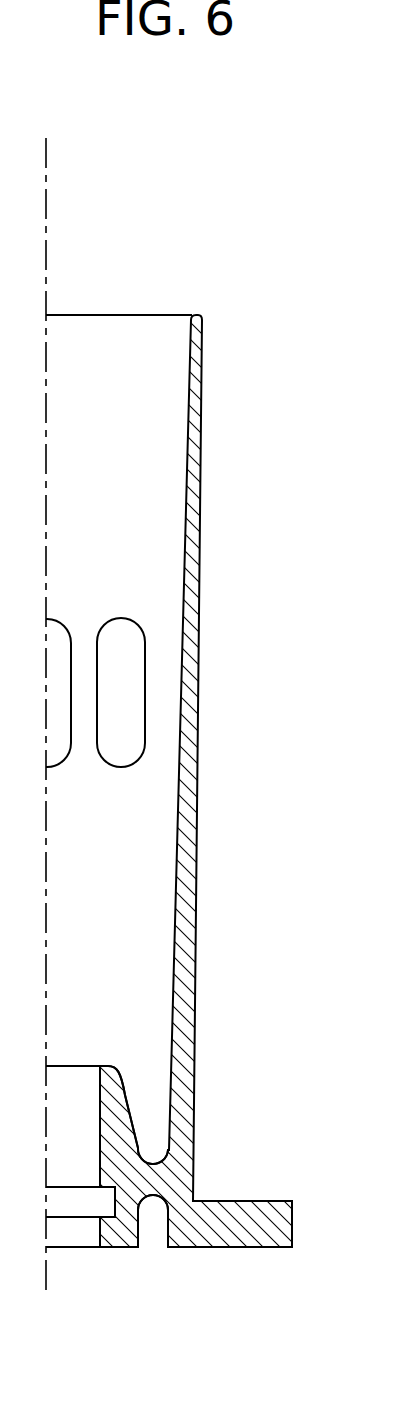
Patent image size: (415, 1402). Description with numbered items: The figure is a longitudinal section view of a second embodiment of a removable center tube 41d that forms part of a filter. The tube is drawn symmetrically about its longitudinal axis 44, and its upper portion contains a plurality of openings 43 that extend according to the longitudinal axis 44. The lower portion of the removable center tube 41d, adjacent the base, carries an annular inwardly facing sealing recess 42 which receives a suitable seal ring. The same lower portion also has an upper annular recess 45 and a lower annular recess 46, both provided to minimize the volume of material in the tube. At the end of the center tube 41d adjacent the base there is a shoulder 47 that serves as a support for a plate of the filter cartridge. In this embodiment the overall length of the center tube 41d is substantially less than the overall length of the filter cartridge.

The longitudinal axis 44 is at (46, 234).
The openings 43 is at (119, 615).
The upper annular recess 45 is at (152, 1147).
The removable center tube 41d is at (177, 1178).
The annular inwardly facing sealing recess 42 is at (67, 1207).
The lower annular recess 46 is at (153, 1237).
The shoulder 47 is at (238, 1235).